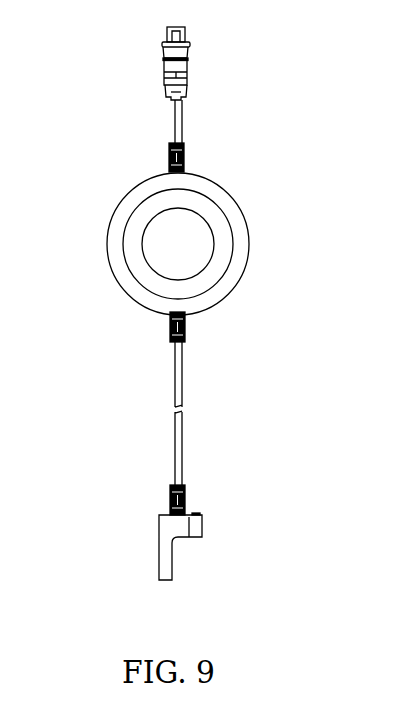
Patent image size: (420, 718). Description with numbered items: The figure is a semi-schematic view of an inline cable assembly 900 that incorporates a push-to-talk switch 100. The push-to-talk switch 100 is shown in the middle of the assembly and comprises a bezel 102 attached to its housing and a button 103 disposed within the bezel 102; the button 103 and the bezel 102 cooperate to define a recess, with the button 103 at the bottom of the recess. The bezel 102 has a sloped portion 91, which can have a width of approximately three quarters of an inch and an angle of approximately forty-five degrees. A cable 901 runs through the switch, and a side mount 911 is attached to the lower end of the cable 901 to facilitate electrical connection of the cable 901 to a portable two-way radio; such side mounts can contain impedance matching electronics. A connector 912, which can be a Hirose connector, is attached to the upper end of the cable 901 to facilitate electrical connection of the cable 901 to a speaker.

The inline cable assembly 900 is at (112, 377).
The push-to-talk switch 100 is at (243, 200).
The bezel 102 is at (121, 283).
The button 103 is at (197, 258).
The sloped portion 91 is at (205, 282).
The cable 901 is at (182, 118).
The connector 912 is at (193, 50).
The side mount 911 is at (159, 538).